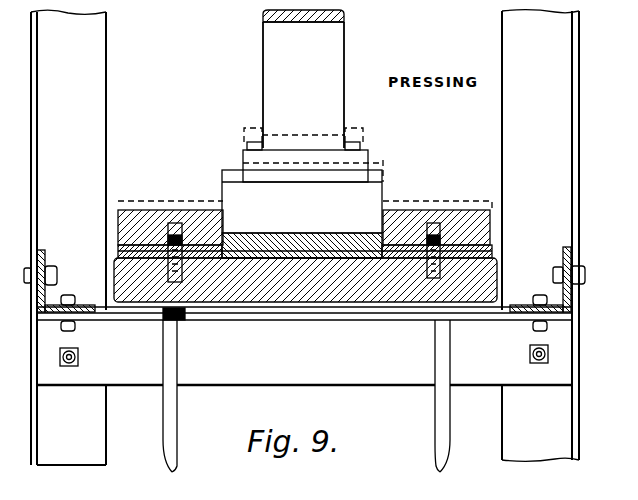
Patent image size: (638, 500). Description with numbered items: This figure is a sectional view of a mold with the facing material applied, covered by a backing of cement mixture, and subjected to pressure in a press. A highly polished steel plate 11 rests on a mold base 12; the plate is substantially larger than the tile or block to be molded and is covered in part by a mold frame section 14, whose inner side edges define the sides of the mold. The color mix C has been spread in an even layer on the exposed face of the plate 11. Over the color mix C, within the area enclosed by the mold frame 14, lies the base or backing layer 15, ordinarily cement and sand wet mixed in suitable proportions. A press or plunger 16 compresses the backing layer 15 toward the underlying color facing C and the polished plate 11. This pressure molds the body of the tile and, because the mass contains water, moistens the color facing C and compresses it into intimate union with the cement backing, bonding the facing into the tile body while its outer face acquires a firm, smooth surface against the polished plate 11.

The mold frame section 14 is at (195, 222).
The press or plunger 16 is at (265, 203).
The color mix c is at (282, 260).
The highly polished steel plate 11 is at (313, 260).
The mold base 12 is at (337, 287).
The base or backing layer 15 is at (363, 242).